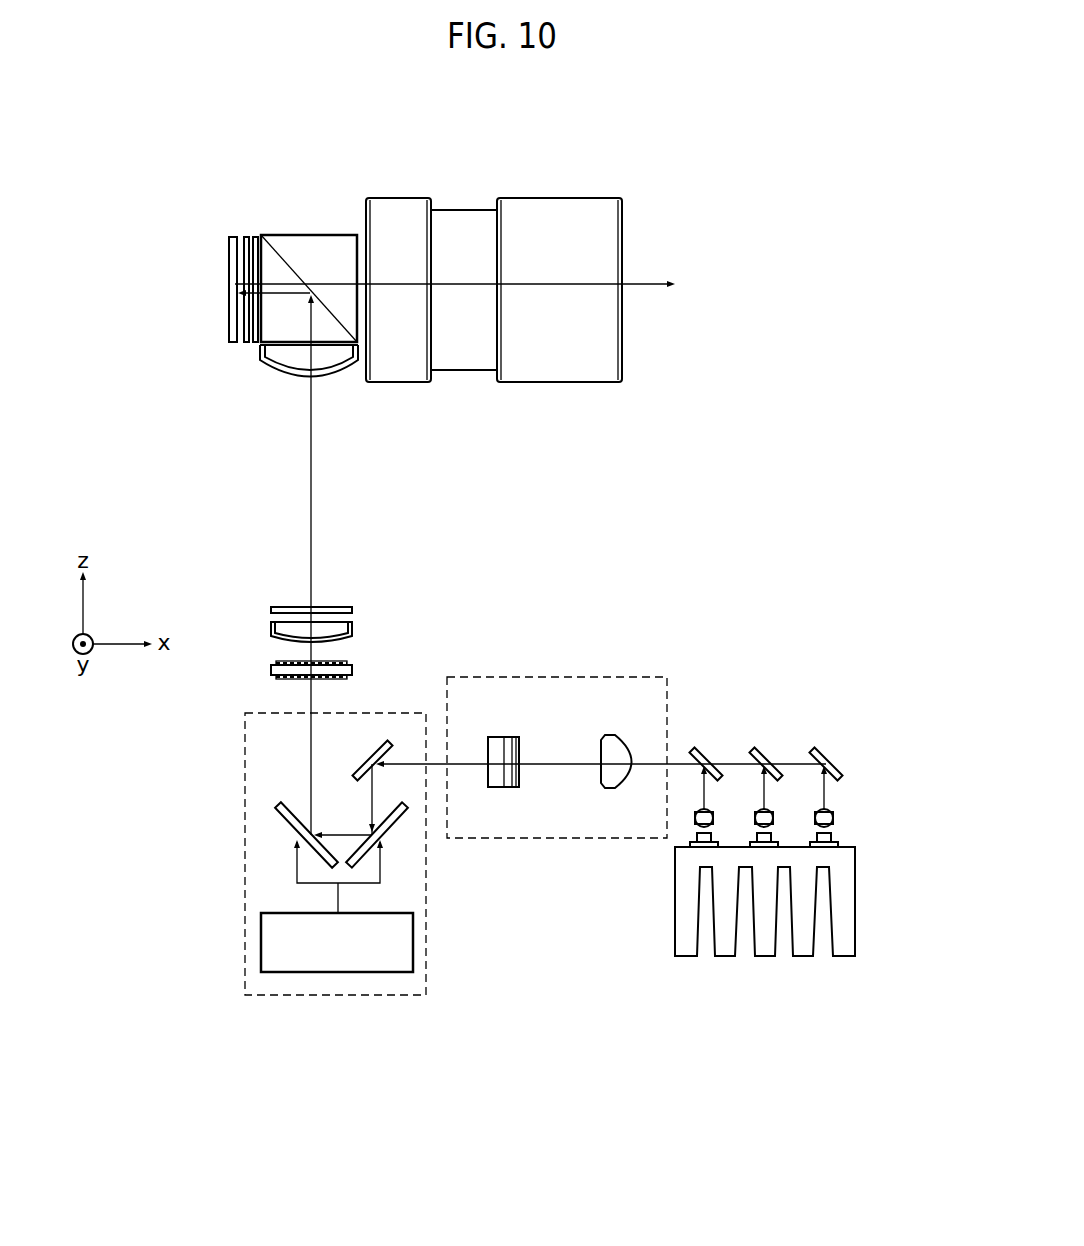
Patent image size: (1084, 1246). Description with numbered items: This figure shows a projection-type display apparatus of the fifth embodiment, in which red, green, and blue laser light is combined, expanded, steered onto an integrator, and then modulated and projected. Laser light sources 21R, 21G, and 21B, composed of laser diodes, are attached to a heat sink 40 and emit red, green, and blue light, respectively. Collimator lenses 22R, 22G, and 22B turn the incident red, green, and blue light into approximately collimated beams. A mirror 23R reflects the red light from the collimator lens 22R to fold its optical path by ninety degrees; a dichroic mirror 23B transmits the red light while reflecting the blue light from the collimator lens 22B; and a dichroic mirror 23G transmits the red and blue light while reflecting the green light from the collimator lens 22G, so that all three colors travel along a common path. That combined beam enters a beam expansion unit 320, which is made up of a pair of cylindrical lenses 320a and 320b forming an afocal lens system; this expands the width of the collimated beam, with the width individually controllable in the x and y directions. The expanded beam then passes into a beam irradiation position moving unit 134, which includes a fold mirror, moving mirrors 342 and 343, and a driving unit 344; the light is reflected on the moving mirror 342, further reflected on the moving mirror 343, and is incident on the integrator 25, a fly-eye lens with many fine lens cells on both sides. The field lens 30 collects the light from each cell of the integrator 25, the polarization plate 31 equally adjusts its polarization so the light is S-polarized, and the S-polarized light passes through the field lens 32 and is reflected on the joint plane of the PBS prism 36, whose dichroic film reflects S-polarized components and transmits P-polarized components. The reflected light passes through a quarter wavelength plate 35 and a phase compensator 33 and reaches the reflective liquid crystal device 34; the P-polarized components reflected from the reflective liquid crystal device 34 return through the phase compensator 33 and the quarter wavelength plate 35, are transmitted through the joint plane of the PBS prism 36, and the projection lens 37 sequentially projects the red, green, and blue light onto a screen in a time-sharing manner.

The laser light source 21G is at (690, 843).
The laser light source 21B is at (756, 834).
The laser light source 21R is at (833, 838).
The collimator lens 22G is at (694, 819).
The collimator lens 22B is at (774, 814).
The collimator lens 22R is at (832, 821).
The dichroic mirror 23G is at (708, 751).
The dichroic mirror 23B is at (770, 751).
The mirror 23R is at (834, 751).
The integrator 25 is at (271, 670).
The field lens 30 is at (272, 627).
The polarization plate 31 is at (278, 607).
The field lens 32 is at (283, 363).
The phase compensator 33 is at (246, 236).
The reflective liquid crystal device 34 is at (229, 262).
The quarter wavelength plate 35 is at (256, 236).
The PBS prism 36 is at (350, 314).
The projection lens 37 is at (462, 220).
The heat sink 40 is at (768, 945).
The beam irradiation position moving unit 134 is at (283, 997).
The beam expansion unit 320 is at (582, 677).
The cylindrical lens 320a is at (608, 735).
The cylindrical lens 320b is at (507, 737).
The moving mirror 342 is at (393, 825).
The moving mirror 343 is at (289, 827).
The driving unit 344 is at (372, 974).